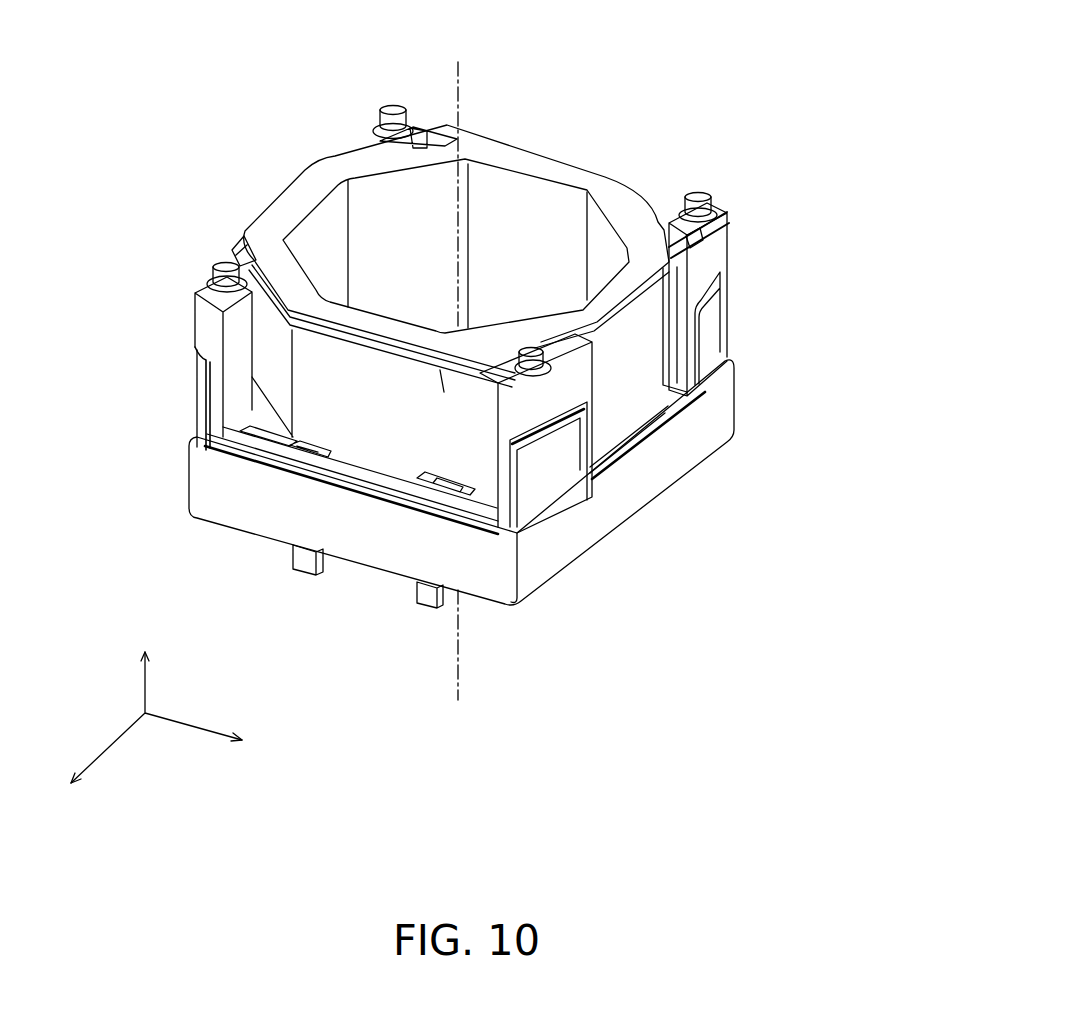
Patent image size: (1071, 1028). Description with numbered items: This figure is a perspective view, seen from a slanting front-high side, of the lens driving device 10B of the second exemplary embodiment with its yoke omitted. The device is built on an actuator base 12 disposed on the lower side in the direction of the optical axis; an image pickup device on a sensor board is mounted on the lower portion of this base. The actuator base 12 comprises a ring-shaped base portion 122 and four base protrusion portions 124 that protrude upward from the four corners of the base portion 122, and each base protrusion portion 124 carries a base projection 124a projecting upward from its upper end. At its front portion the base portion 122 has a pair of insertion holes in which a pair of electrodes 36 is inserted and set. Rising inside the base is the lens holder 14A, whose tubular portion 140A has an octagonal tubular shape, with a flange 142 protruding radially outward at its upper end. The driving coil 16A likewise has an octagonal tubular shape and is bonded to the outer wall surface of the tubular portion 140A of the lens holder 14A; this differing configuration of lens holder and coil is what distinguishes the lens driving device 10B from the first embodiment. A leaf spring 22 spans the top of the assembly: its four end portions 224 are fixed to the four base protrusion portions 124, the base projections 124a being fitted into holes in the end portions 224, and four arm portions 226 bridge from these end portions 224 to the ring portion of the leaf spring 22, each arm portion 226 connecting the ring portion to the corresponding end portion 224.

The lens driving device 10B is at (775, 84).
The actuator base 12 is at (720, 422).
The base portion 122 is at (647, 500).
The base protrusion portions 124 is at (352, 152).
The base projections 124a is at (393, 108).
The lens holder 14A is at (636, 188).
The tubular portion 140A is at (463, 88).
The flange 142 is at (617, 197).
The driving coil 16A is at (623, 380).
The leaf spring 22 is at (244, 228).
The end portions 224 is at (373, 120).
The arm portions 226 is at (437, 125).
The electrodes 36 is at (290, 553).